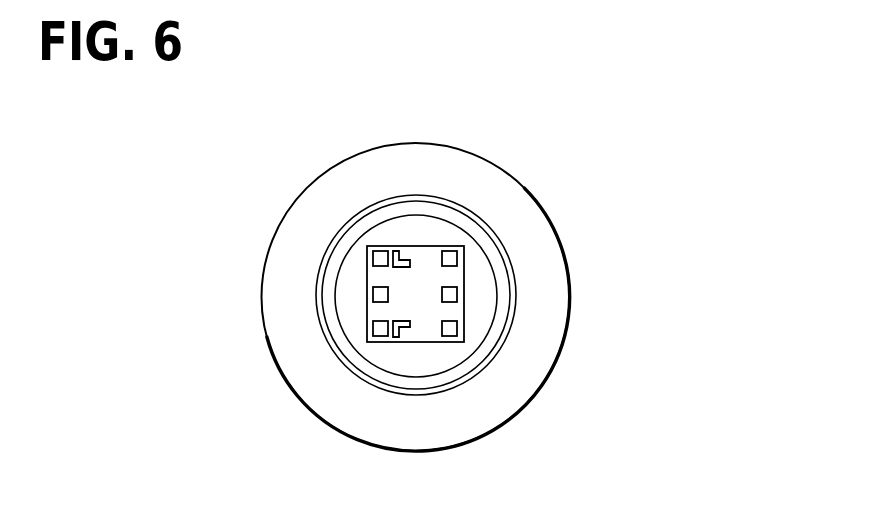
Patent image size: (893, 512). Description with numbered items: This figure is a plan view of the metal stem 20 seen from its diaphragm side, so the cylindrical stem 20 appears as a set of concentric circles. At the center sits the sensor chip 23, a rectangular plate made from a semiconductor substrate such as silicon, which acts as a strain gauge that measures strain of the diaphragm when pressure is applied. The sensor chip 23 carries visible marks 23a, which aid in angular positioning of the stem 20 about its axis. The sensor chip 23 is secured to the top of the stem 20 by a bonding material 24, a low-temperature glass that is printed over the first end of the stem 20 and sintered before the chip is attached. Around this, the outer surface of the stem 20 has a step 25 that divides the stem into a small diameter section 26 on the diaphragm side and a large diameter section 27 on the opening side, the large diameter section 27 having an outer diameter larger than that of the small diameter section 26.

The stem 20 is at (465, 292).
The sensor chip 23 is at (424, 275).
The visible marks 23a is at (396, 250).
The bonding material 24 is at (479, 280).
The step 25 is at (550, 298).
The small diameter section 26 is at (490, 360).
The large diameter section 27 is at (563, 347).